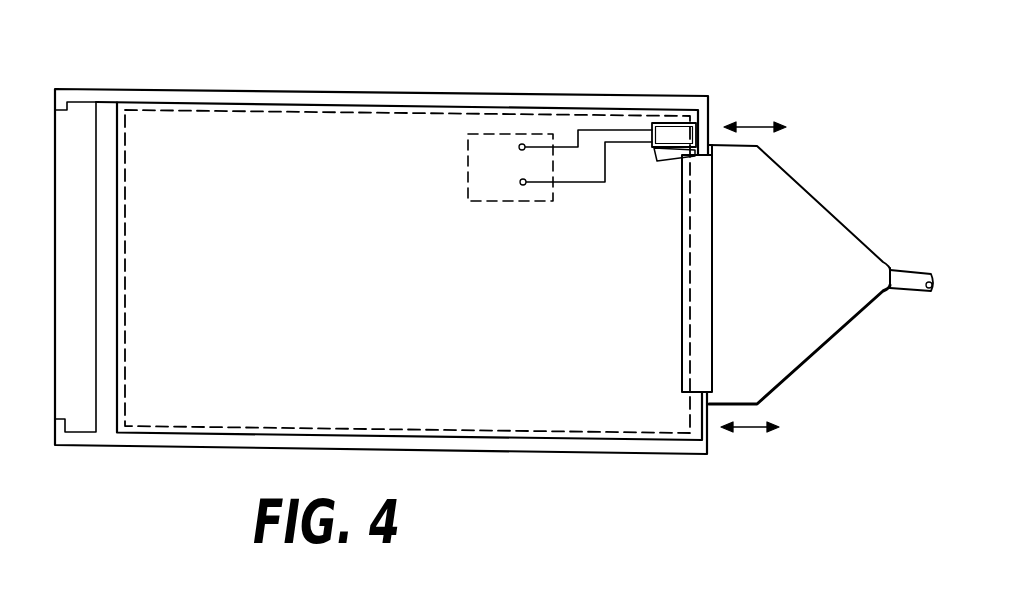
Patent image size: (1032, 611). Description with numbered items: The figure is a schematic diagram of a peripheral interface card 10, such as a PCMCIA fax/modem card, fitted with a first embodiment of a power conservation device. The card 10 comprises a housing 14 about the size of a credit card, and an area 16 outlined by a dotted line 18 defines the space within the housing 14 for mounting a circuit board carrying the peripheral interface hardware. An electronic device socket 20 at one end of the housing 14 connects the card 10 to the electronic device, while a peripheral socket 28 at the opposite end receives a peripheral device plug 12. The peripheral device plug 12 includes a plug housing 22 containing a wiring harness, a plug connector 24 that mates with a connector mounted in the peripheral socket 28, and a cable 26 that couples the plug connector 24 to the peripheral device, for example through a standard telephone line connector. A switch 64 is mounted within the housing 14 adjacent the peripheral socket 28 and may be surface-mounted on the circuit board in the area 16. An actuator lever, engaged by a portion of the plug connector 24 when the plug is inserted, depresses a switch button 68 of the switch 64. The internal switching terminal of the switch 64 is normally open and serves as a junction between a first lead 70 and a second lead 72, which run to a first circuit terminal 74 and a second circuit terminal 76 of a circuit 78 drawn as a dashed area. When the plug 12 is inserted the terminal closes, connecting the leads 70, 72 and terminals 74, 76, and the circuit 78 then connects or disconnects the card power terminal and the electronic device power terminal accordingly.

The peripheral interface card 10 is at (405, 92).
The peripheral device plug 12 is at (840, 217).
The housing 14 is at (335, 93).
The area 16 is at (257, 140).
The dotted line 18 is at (165, 112).
The electronic device socket 20 is at (65, 138).
The plug housing 22 is at (798, 195).
The plug connector 24 is at (685, 253).
The cable 26 is at (908, 268).
The peripheral socket 28 is at (666, 386).
The switch 64 is at (660, 121).
The switch button 68 is at (656, 156).
The first lead 70 is at (591, 130).
The second lead 72 is at (590, 185).
The first circuit terminal 74 is at (522, 144).
The second circuit terminal 76 is at (523, 187).
The circuit 78 is at (468, 176).